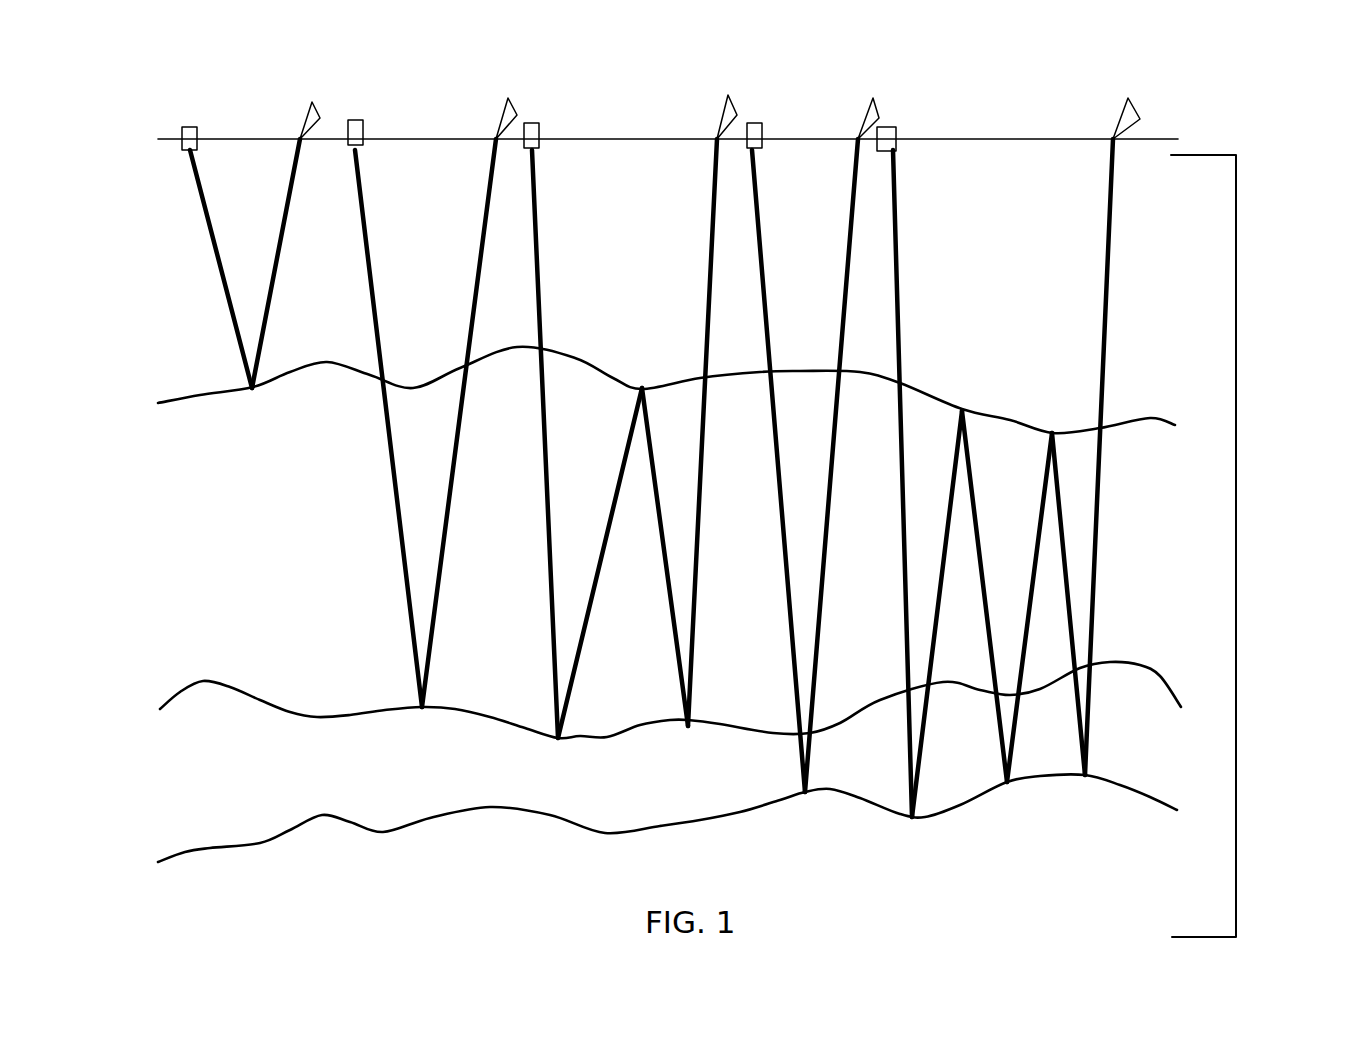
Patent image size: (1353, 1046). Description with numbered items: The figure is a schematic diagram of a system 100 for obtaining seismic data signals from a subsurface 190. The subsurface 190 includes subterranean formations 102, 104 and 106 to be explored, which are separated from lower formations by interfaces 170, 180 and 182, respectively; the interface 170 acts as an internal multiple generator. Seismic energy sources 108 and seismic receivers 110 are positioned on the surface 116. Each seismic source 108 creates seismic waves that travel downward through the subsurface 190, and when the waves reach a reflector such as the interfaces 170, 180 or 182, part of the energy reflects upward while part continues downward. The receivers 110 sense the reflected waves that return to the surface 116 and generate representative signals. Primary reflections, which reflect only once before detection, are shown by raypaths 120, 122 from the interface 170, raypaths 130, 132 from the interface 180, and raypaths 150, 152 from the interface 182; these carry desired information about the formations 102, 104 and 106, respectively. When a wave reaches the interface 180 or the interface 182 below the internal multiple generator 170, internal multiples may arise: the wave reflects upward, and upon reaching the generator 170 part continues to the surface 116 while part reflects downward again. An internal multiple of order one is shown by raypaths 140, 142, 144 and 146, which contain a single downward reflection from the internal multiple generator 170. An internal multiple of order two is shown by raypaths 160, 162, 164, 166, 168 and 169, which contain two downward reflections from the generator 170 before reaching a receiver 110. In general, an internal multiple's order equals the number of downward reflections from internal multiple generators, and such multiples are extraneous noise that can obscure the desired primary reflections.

The system 100 is at (200, 88).
The subterranean formation 102 is at (931, 271).
The subterranean formation 104 is at (213, 543).
The subterranean formation 106 is at (187, 769).
The seismic energy source 108 is at (188, 127).
The seismic receiver 110 is at (312, 102).
The surface 116 is at (1152, 138).
The raypath 120 is at (215, 253).
The raypath 122 is at (290, 162).
The raypath 130 is at (367, 267).
The raypath 132 is at (480, 262).
The raypath 140 is at (535, 258).
The raypath 142 is at (628, 430).
The raypath 144 is at (677, 658).
The raypath 146 is at (710, 261).
The raypath 150 is at (778, 507).
The raypath 152 is at (845, 273).
The raypath 160 is at (900, 467).
The raypath 162 is at (947, 498).
The raypath 164 is at (978, 508).
The raypath 166 is at (1043, 472).
The raypath 168 is at (1065, 595).
The raypath 169 is at (1097, 598).
The interface 170 is at (1148, 415).
The interface 180 is at (1157, 678).
The interface 182 is at (1138, 787).
The subsurface 190 is at (1236, 300).